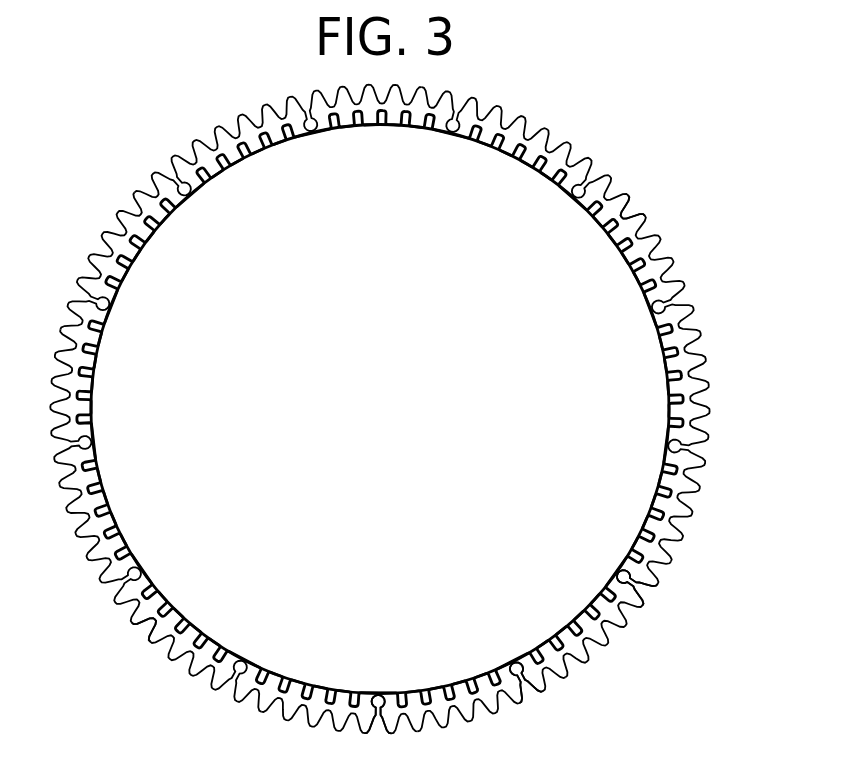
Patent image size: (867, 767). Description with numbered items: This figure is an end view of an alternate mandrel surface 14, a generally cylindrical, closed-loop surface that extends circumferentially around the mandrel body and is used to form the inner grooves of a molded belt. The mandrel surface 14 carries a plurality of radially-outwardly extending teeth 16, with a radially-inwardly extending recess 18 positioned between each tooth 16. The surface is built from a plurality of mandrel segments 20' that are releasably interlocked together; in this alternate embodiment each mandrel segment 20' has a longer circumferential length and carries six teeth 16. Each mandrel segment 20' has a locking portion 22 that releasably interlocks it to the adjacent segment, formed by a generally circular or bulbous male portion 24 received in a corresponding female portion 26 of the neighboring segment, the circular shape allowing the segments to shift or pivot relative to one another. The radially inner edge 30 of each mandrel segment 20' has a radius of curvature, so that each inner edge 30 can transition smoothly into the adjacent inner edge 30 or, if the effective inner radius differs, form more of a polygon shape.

The mandrel surface 14 is at (668, 606).
The tooth 16 is at (125, 213).
The recess 18 is at (614, 192).
The mandrel segment 20' is at (404, 435).
The locking portion 22 is at (520, 666).
The male portion 24 is at (388, 707).
The female portion 26 is at (623, 563).
The radially inner edge 30 is at (103, 335).